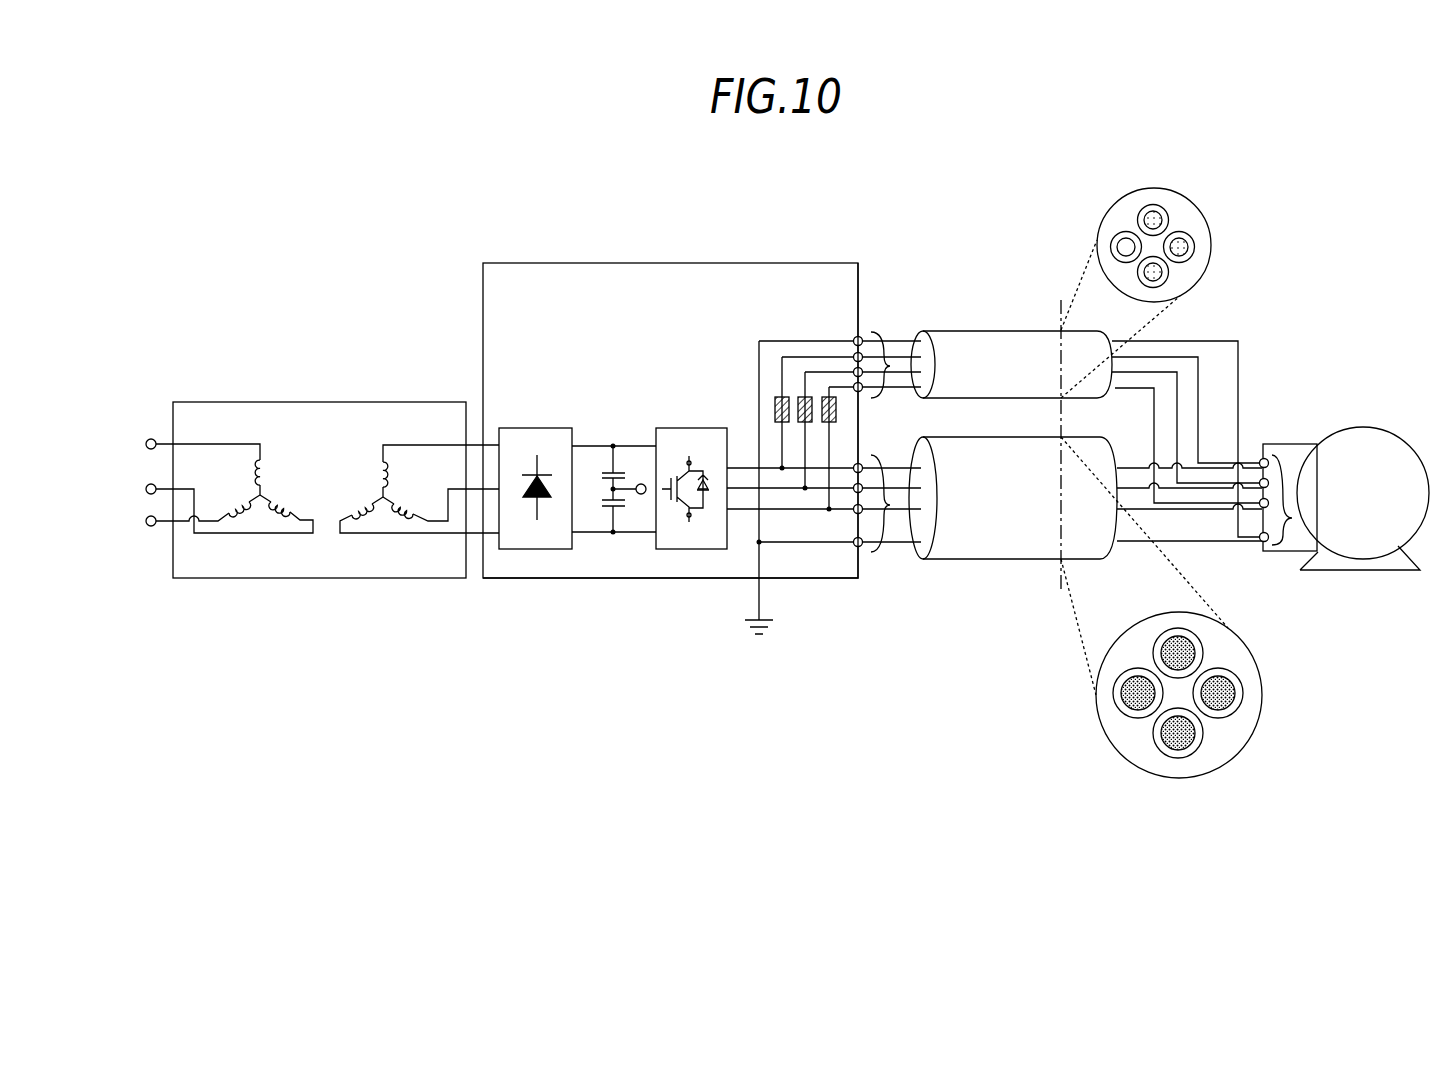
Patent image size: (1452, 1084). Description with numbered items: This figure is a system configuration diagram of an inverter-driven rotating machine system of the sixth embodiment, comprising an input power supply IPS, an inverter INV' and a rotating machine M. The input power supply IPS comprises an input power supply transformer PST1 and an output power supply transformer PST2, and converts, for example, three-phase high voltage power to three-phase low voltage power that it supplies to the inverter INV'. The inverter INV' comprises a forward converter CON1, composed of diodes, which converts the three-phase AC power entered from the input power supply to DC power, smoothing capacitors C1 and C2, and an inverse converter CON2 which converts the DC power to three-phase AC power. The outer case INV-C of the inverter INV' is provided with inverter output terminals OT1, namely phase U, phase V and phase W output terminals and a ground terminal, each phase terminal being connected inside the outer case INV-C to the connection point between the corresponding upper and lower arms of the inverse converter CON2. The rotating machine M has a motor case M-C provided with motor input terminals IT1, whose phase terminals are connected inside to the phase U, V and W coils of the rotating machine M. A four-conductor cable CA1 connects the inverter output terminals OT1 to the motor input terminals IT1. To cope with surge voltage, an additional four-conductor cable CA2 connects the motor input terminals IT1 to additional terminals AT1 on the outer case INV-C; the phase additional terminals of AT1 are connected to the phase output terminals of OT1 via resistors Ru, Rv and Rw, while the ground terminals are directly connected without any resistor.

The input power supply IPS is at (300, 402).
The input power supply transformer PST1 is at (263, 525).
The output power supply transformer PST2 is at (385, 525).
The inverter INV' is at (670, 415).
The forward converter CON1 is at (537, 428).
The inverse converter CON2 is at (692, 428).
The smoothing capacitor C1 is at (622, 470).
The smoothing capacitor C2 is at (622, 510).
The phase U resistor Ru is at (782, 397).
The phase V resistor Rv is at (805, 397).
The phase W resistor Rw is at (829, 397).
The additional terminals AT1 is at (890, 366).
The inverter output terminals OT1 is at (890, 505).
The outer case INV-C is at (818, 578).
The cable CA1 is at (1062, 539).
The additional cable CA2 is at (1063, 362).
The motor case M-C is at (1290, 444).
The rotating machine M is at (1363, 498).
The motor input terminals IT1 is at (1292, 518).